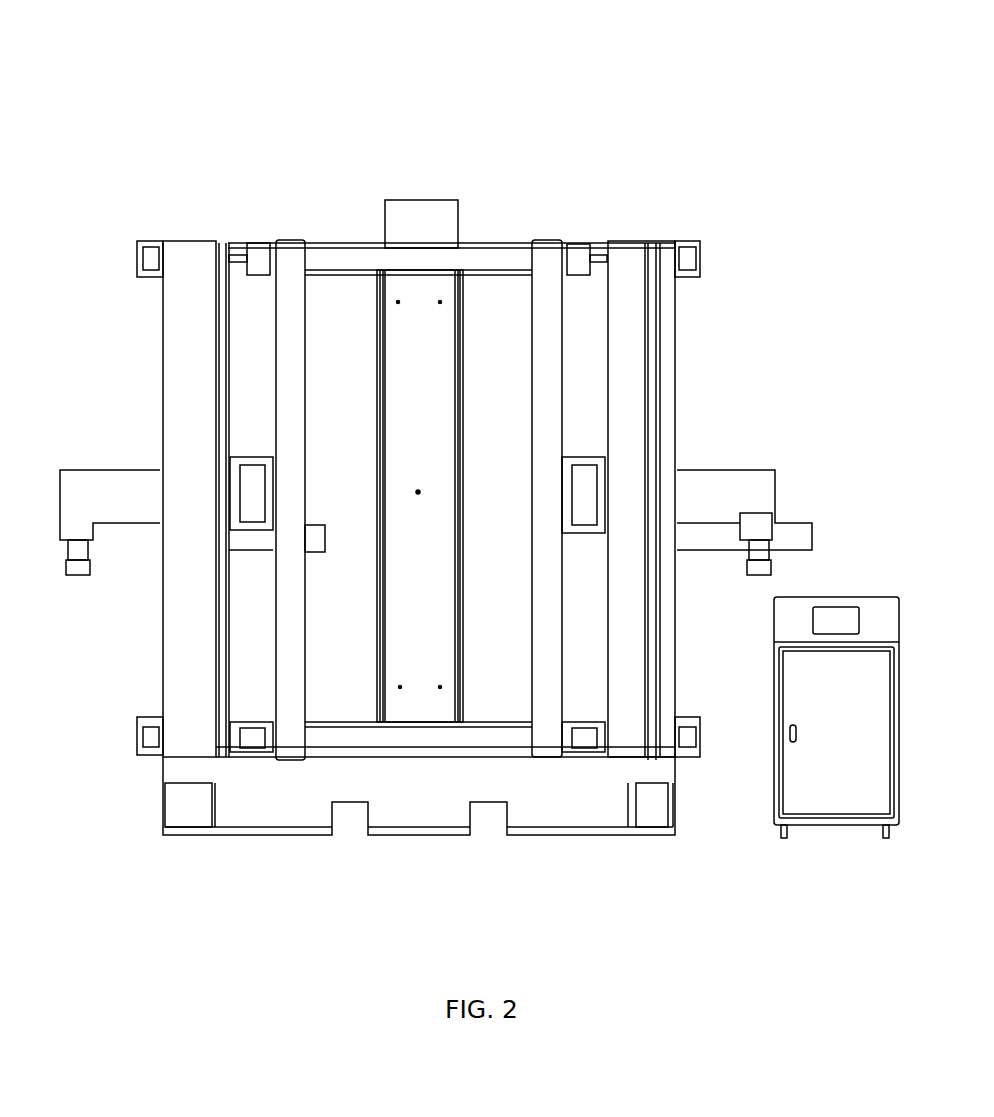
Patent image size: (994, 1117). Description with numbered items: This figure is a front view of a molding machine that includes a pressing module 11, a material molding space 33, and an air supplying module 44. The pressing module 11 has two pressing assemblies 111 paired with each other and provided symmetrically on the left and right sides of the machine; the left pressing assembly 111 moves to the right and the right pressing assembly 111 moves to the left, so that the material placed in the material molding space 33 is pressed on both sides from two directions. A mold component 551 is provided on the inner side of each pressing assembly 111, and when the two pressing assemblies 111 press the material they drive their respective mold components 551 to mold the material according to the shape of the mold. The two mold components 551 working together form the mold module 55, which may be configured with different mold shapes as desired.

The pressing module 11 is at (503, 930).
The pressing assembly 111 is at (170, 612).
The material molding space 33 is at (415, 433).
The air supplying module 44 is at (428, 200).
The mold module 55 is at (470, 28).
The mold component 551 is at (295, 300).